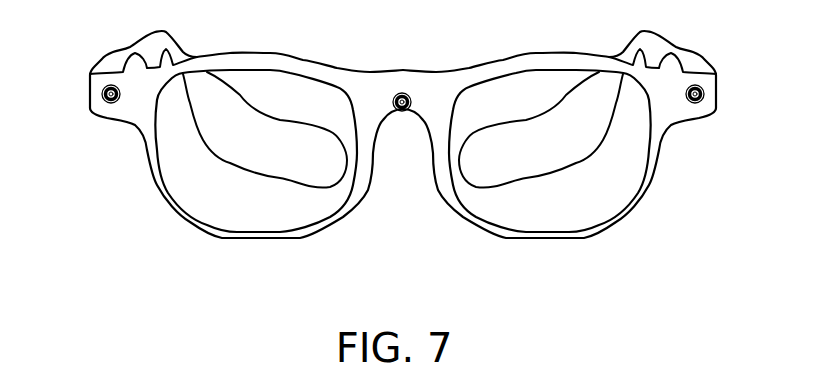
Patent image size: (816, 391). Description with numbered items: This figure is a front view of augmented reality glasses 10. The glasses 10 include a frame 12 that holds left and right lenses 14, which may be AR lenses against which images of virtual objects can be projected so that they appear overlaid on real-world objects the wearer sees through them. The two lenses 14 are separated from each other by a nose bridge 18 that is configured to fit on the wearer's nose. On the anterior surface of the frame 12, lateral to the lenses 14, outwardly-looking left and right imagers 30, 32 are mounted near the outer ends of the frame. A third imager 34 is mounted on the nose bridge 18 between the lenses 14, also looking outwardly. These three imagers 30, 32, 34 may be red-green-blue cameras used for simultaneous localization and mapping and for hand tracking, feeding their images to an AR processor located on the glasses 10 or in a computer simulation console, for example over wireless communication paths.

The augmented reality glasses 10 is at (407, 136).
The frame 12 is at (542, 60).
The lenses 14 is at (607, 200).
The nose bridge 18 is at (403, 72).
The left imager 30 is at (705, 94).
The right imager 32 is at (101, 93).
The third imager 34 is at (403, 111).